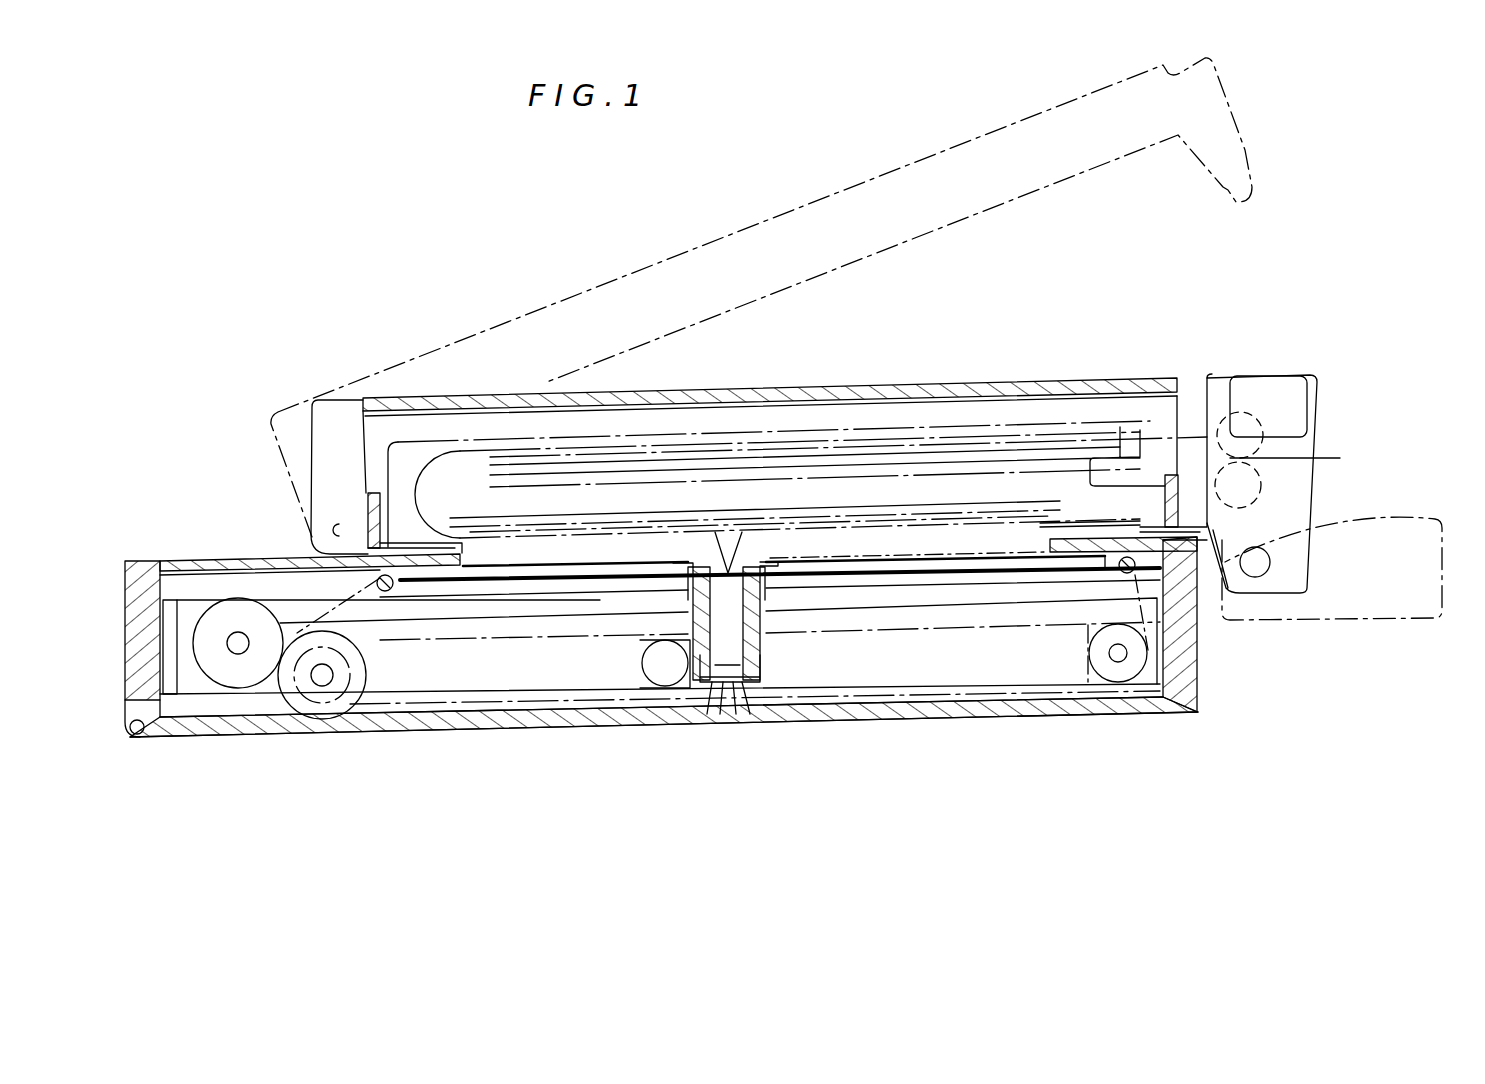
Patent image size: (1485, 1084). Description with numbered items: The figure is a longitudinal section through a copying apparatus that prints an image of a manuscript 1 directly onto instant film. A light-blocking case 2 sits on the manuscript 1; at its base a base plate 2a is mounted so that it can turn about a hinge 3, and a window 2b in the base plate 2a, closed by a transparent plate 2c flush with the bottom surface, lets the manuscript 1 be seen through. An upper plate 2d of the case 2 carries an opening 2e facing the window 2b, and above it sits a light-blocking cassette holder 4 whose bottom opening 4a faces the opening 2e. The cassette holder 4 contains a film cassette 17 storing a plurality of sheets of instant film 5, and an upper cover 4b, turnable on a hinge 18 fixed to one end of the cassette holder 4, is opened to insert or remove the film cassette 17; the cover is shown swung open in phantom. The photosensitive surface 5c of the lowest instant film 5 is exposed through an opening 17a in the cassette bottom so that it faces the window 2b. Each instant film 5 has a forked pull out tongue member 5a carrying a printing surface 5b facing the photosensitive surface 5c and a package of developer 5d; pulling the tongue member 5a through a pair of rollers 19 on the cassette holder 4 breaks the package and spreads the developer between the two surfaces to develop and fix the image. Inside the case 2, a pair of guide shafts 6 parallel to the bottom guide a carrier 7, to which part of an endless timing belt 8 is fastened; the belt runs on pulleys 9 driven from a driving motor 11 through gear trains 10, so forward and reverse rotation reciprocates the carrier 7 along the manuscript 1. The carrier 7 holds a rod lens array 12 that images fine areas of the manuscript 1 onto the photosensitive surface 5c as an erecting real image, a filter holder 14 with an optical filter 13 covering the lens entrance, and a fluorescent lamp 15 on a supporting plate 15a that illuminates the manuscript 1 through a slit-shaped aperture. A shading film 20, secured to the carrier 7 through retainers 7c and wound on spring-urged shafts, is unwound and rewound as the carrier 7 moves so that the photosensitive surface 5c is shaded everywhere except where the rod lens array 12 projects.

The manuscript 1 is at (568, 735).
The case 2 is at (132, 632).
The base plate 2a is at (265, 733).
The window 2b is at (490, 703).
The transparent plate 2c is at (620, 728).
The upper plate 2d is at (215, 562).
The opening 2e is at (465, 565).
The hinge 3 is at (130, 727).
The cassette holder 4 is at (745, 400).
The opening 4a is at (560, 538).
The upper cover 4b is at (897, 182).
The instant film 5 is at (680, 450).
The pull out tongue member 5a is at (1320, 460).
The printing surface 5b is at (950, 445).
The photosensitive surface 5c is at (908, 523).
The developer 5d is at (510, 455).
The guide shafts 6 is at (880, 600).
The carrier 7 is at (763, 640).
The retainers 7c is at (688, 565).
The endless timing belt 8 is at (992, 690).
The pulleys 9 is at (1100, 690).
The gear trains 10 is at (212, 688).
The driving motor 11 is at (178, 625).
The rod lens array 12 is at (755, 666).
The optical filter 13 is at (712, 700).
The filter holder 14 is at (752, 700).
The fluorescent lamp 15 is at (652, 668).
The supporting plate 15a is at (652, 655).
The film cassette 17 is at (828, 432).
The opening 17a is at (1062, 520).
The hinge 18 is at (327, 533).
The rollers 19 is at (1240, 418).
The shading film 20 is at (838, 552).